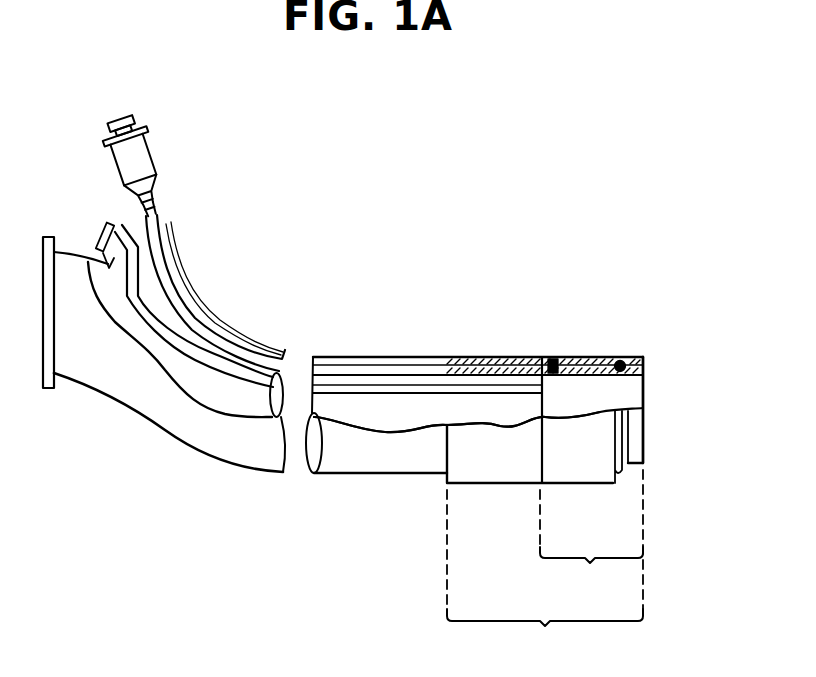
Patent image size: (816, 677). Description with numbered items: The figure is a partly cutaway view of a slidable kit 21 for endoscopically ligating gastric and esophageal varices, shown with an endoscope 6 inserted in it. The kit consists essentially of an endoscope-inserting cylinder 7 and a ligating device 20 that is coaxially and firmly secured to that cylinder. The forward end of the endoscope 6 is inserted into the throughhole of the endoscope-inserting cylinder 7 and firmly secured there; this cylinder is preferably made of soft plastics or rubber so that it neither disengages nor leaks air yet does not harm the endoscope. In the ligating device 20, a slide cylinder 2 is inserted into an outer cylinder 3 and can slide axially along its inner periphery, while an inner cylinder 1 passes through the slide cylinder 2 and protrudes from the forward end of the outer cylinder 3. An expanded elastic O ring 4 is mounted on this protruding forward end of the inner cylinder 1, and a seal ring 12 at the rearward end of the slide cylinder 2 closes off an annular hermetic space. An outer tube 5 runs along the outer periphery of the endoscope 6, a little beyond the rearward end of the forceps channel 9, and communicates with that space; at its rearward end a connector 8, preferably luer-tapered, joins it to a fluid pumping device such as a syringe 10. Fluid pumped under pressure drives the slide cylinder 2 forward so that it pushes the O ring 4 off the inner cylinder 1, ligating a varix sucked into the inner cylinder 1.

The inner cylinder 1 is at (644, 368).
The slide cylinder 2 is at (619, 363).
The outer cylinder 3 is at (598, 357).
The elastic O ring 4 is at (622, 468).
The outer tube 5 is at (363, 357).
The endoscope 6 is at (366, 458).
The endoscope-inserting cylinder 7 is at (498, 468).
The connector 8 is at (158, 215).
The forceps channel 9 is at (100, 230).
The syringe 10 is at (138, 152).
The seal ring 12 is at (553, 357).
The ligating device 20 is at (615, 606).
The slidable kit 21 is at (557, 669).